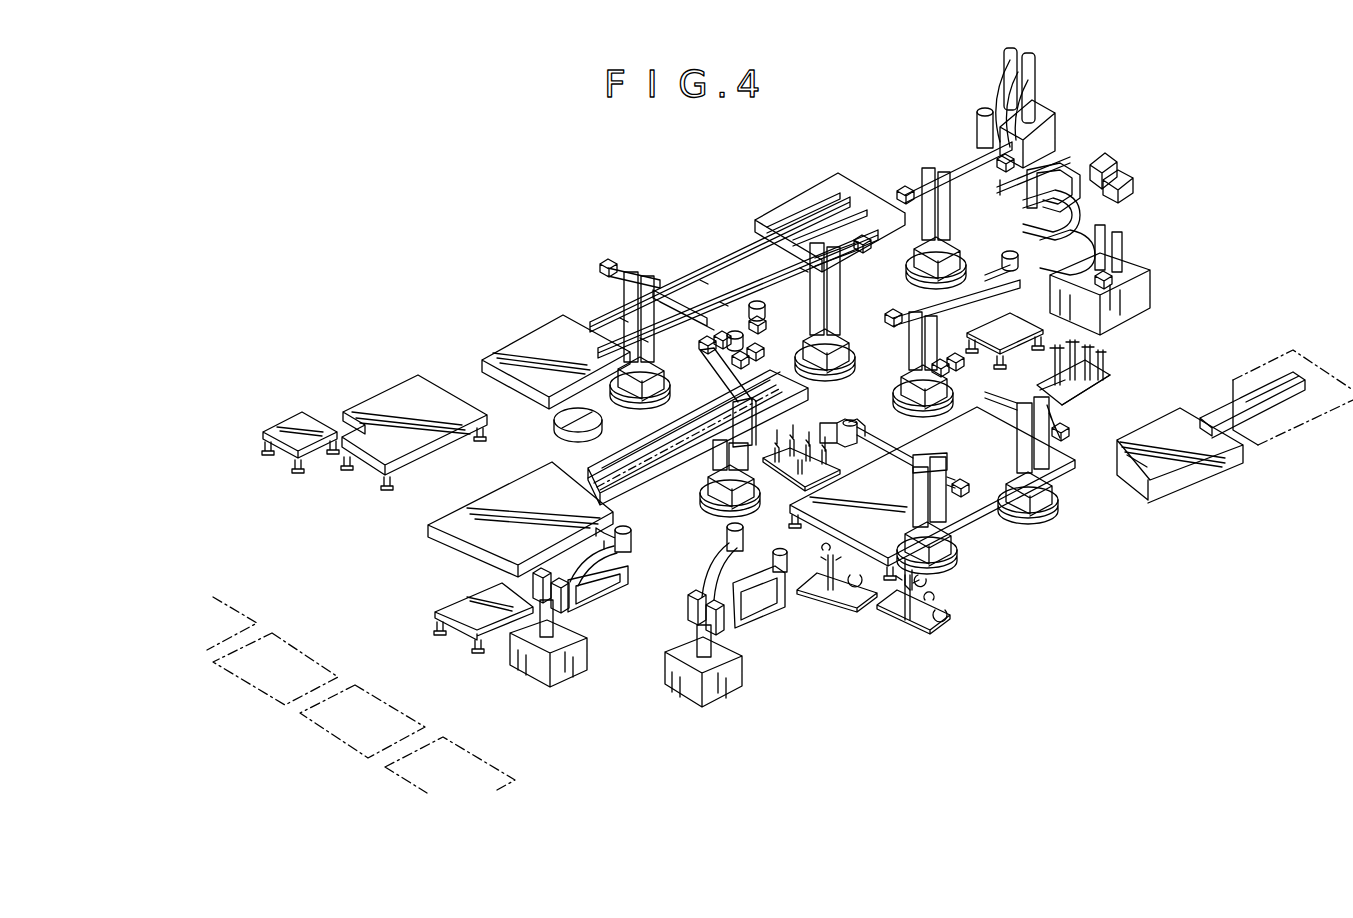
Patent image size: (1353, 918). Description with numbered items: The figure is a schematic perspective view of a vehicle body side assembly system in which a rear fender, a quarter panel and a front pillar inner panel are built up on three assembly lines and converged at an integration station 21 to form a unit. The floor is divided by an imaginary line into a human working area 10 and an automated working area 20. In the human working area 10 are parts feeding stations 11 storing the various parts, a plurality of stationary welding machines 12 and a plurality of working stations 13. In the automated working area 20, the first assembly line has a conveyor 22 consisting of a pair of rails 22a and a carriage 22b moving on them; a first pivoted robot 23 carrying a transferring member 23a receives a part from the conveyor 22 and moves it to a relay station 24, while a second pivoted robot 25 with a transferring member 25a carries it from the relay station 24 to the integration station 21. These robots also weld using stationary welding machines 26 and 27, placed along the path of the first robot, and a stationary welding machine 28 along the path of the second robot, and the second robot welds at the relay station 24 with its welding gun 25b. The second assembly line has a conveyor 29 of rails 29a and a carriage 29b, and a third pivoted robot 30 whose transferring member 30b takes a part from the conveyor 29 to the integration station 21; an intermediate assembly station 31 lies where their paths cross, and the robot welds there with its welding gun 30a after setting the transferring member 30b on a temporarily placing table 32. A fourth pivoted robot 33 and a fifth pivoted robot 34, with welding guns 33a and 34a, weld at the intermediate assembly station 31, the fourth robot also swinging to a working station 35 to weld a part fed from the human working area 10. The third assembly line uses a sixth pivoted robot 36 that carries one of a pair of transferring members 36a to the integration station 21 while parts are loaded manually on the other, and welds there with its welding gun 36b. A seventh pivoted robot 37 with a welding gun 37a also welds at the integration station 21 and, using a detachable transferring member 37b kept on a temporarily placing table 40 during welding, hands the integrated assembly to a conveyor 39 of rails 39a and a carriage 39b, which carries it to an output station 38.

The human working area 10 is at (410, 341).
The parts feeding stations 11 is at (290, 642).
The stationary welding machines 12 is at (578, 655).
The working stations 13 is at (287, 427).
The automated working area 20 is at (774, 197).
The integration station 21 is at (968, 502).
The conveyor 22 is at (740, 236).
The rails 22a is at (717, 288).
The carriage 22b is at (528, 338).
The first pivoted robot 23 is at (917, 163).
The transferring member 23a is at (1005, 172).
The relay station 24 is at (1030, 320).
The second pivoted robot 25 is at (889, 302).
The transferring member 25a is at (1112, 287).
The welding gun 25b is at (1016, 261).
The stationary welding machine 26 is at (1045, 110).
The stationary welding machine 27 is at (1072, 152).
The stationary welding machine 28 is at (1135, 258).
The conveyor 29 is at (440, 513).
The rails 29a is at (636, 537).
The carriage 29b is at (513, 492).
The third pivoted robot 30 is at (700, 474).
The welding gun 30a is at (627, 311).
The transferring member 30b is at (802, 455).
The intermediate assembly station 31 is at (806, 385).
The temporarily placing table 32 is at (780, 472).
The fourth pivoted robot 33 is at (617, 251).
The welding gun 33a is at (748, 350).
The fifth pivoted robot 34 is at (853, 321).
The welding gun 34a is at (765, 325).
The working station 35 is at (554, 430).
The sixth pivoted robot 36 is at (968, 553).
The transferring members 36a is at (847, 600).
The welding gun 36b is at (865, 423).
The seventh pivoted robot 37 is at (1066, 495).
The welding gun 37a is at (942, 356).
The transferring member 37b is at (1095, 348).
The output station 38 is at (1310, 426).
The conveyor 39 is at (1191, 403).
The rails 39a is at (1305, 396).
The carriage 39b is at (1190, 470).
The temporarily placing table 40 is at (1062, 400).